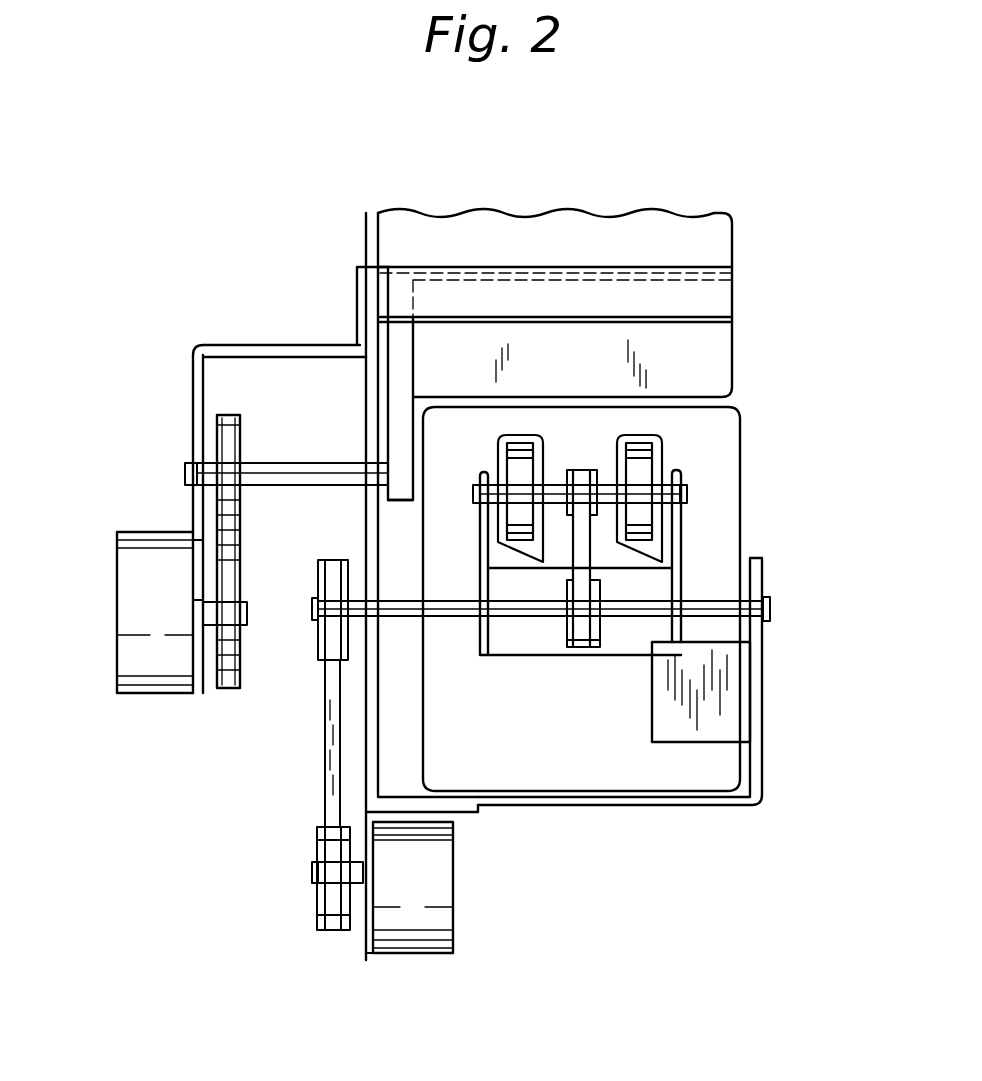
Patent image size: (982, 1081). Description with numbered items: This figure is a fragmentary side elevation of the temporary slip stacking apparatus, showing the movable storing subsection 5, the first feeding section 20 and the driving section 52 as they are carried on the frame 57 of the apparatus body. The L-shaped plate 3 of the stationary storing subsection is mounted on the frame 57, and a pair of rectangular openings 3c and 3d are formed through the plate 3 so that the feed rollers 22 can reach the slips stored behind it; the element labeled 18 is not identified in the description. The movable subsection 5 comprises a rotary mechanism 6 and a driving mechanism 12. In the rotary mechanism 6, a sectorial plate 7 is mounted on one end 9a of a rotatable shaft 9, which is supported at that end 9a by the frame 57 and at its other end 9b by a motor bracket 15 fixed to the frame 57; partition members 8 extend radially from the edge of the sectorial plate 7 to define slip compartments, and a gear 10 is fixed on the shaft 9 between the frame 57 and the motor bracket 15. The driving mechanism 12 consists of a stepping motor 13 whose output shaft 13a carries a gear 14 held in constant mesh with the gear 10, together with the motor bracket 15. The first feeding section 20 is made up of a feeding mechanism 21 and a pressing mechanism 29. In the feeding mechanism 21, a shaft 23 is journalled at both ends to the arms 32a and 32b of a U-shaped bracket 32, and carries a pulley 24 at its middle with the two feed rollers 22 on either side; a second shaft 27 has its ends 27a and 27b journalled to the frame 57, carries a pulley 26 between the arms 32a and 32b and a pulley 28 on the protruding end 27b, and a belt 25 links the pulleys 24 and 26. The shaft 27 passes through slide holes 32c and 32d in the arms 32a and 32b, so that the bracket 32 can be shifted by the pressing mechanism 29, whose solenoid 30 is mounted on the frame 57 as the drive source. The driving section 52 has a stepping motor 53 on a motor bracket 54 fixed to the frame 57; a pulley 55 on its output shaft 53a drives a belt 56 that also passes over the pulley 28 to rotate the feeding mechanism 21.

The plate 3 is at (740, 462).
The rectangular opening 3c is at (620, 440).
The rectangular opening 3d is at (500, 460).
The movable storing subsection 5 is at (100, 270).
The rotary mechanism 6 is at (235, 270).
The sectorial plate 7 is at (395, 358).
The partition member 8 is at (438, 352).
The rotatable shaft 9 is at (302, 463).
The shaft end 9a is at (400, 503).
The shaft end 9b is at (185, 470).
The gear 10 is at (232, 415).
The driving mechanism 12 is at (110, 455).
The stepping motor 13 is at (124, 532).
The output shaft 13a is at (247, 612).
The gear 14 is at (200, 540).
The motor bracket 15 is at (193, 410).
The cassette holder 18 is at (732, 252).
The first feeding section 20 is at (898, 503).
The feeding mechanism 21 is at (680, 472).
The feed roller 22 is at (636, 470).
The shaft 23 is at (690, 474).
The intermediate pulley 24 is at (575, 520).
The belt 25 is at (600, 520).
The intermediate pulley 26 is at (565, 630).
The shaft 27 is at (452, 620).
The shaft end 27a is at (770, 615).
The shaft end 27b is at (312, 608).
The intermediate pulley 28 is at (318, 665).
The pressing mechanism 29 is at (695, 636).
The solenoid 30 is at (652, 728).
The bracket 32 is at (490, 655).
The arm 32a is at (681, 520).
The arm 32b is at (480, 560).
The slide hole 32c is at (681, 580).
The slide hole 32d is at (480, 595).
The driving section 52 is at (420, 960).
The stepping motor 53 is at (453, 907).
The output shaft 53a is at (312, 872).
The motor bracket 54 is at (368, 960).
The pulley 55 is at (317, 910).
The belt 56 is at (325, 790).
The frame 57 is at (365, 523).